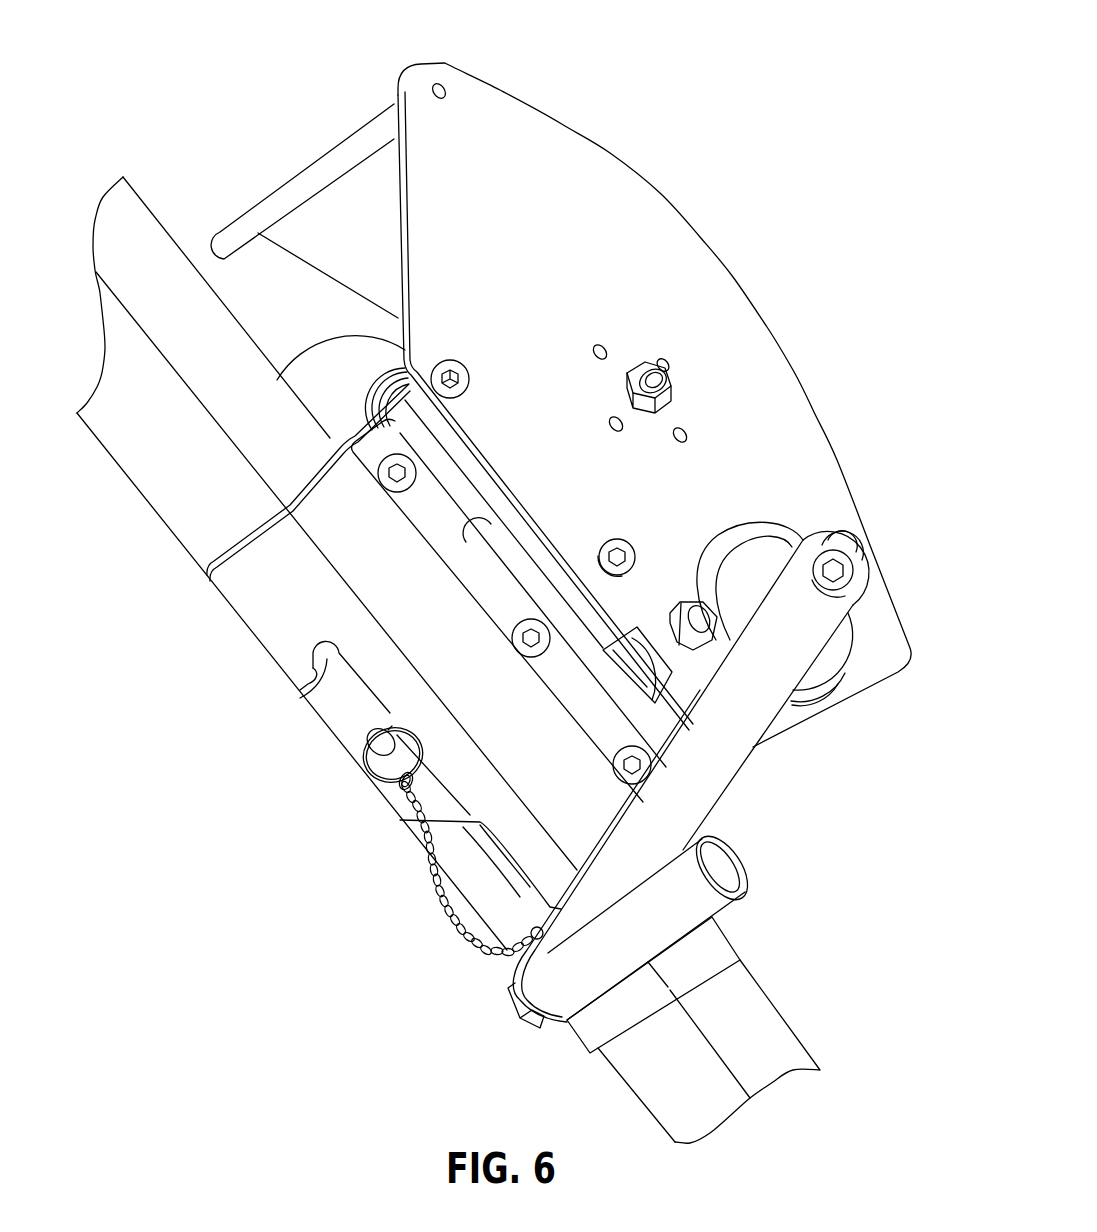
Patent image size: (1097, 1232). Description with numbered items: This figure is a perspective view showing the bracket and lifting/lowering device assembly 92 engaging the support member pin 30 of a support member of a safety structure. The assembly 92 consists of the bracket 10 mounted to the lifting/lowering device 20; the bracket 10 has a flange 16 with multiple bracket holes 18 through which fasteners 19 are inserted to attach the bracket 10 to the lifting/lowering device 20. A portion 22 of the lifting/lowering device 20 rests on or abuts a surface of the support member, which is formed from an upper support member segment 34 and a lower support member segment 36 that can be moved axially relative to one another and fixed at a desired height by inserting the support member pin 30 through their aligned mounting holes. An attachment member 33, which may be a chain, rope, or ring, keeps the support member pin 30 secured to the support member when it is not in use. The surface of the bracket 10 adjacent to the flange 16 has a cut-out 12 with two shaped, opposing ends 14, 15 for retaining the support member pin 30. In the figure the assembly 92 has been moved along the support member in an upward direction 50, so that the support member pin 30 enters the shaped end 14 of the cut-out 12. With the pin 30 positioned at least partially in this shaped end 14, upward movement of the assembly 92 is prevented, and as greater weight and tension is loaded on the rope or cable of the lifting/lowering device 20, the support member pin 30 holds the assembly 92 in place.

The bracket 10 is at (337, 493).
The cut-out 12 is at (328, 712).
The shaped end 14 is at (378, 747).
The shaped end 15 is at (313, 683).
The flange 16 is at (607, 730).
The bracket holes 18 is at (433, 470).
The fasteners 19 is at (523, 640).
The lifting/lowering device 20 is at (764, 387).
The portion of the lifting/lowering device 22 is at (583, 627).
The support member pin 30 is at (370, 767).
The attachment member 33 is at (463, 945).
The upper support member segment 34 is at (570, 1047).
The lower support member segment 36 is at (760, 1025).
The upward direction 50 is at (278, 892).
The bracket and lifting/lowering device assembly 92 is at (763, 760).